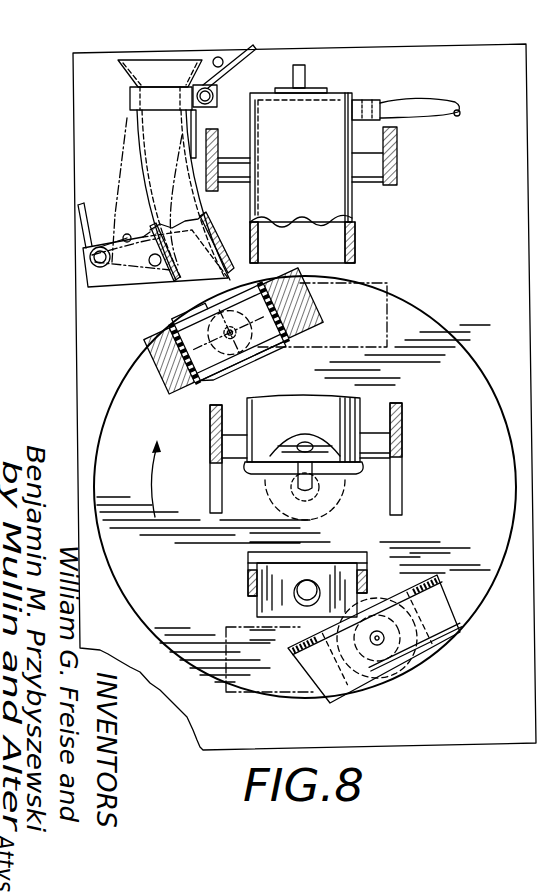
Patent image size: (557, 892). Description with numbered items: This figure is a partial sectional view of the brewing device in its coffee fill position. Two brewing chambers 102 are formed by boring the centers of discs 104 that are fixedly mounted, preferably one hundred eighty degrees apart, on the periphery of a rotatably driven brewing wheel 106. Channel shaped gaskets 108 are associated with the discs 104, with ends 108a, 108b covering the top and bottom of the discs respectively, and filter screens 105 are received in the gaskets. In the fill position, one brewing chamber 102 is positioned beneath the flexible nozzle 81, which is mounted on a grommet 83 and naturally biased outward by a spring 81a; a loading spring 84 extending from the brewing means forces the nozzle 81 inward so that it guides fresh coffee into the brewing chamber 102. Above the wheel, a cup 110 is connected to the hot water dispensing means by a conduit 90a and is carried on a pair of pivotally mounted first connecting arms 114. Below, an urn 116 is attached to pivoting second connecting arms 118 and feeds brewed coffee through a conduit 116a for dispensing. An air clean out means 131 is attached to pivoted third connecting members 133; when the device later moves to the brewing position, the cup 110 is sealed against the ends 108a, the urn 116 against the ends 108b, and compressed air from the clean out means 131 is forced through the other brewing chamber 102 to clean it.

The nozzle 81 is at (153, 166).
The spring 81a is at (222, 64).
The grommet 83 is at (130, 107).
The loading spring 84 is at (83, 243).
The conduit 90a is at (430, 101).
The brewing chamber 102 is at (188, 306).
The disc 104 is at (165, 365).
The filter screen 105 is at (256, 366).
The brewing wheel 106 is at (462, 404).
The channel shaped gasket 108 is at (298, 310).
The gasket end 108a is at (165, 322).
The gasket end 108b is at (322, 382).
The cup 110 is at (312, 184).
The first connecting arm 114 is at (214, 188).
The urn 116 is at (322, 424).
The conduit 116a is at (375, 462).
The second connecting arm 118 is at (210, 420).
The air clean out means 131 is at (255, 603).
The third connecting member 133 is at (250, 585).